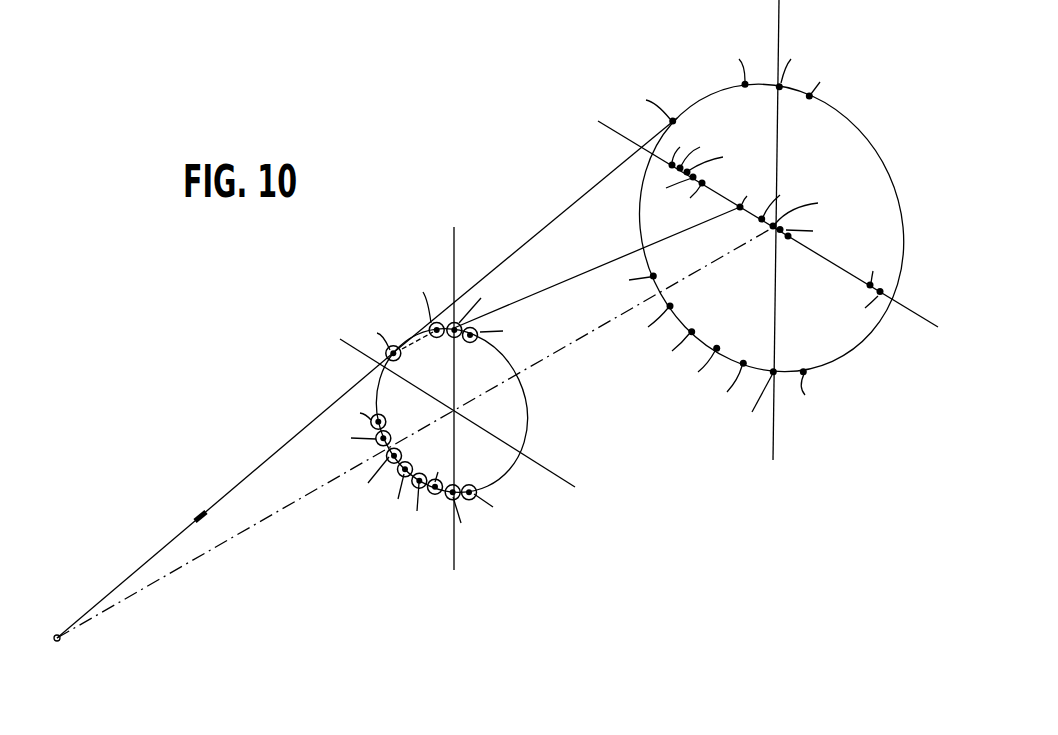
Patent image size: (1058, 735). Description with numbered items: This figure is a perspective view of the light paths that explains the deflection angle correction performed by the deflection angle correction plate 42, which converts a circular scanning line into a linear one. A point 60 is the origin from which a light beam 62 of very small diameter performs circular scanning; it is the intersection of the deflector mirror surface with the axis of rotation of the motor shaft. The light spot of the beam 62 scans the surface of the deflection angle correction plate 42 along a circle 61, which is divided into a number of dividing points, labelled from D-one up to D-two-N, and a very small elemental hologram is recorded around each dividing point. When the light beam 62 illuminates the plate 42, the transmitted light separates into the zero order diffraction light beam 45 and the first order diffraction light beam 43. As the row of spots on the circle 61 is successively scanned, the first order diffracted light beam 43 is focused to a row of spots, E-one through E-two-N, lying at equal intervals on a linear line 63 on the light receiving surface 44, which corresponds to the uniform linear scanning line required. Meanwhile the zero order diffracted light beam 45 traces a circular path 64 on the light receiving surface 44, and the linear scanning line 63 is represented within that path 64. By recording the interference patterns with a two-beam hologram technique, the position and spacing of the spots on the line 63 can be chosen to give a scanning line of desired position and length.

The deflection angle correction plate 42 is at (446, 408).
The first order diffraction light beam 43 is at (605, 263).
The light receiving surface 44 is at (772, 235).
The zero order diffraction light beam 45 is at (560, 213).
The point 60 is at (55, 634).
The circle 61 is at (527, 427).
The light beam 62 is at (242, 479).
The linear line 63 is at (827, 262).
The path of the zero order diffracted light beam 64 is at (877, 155).